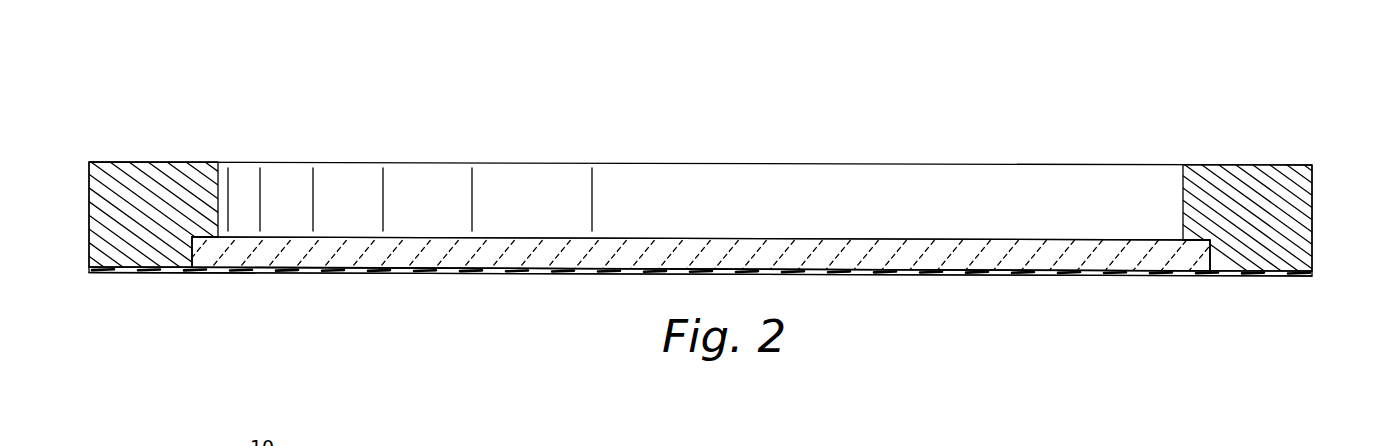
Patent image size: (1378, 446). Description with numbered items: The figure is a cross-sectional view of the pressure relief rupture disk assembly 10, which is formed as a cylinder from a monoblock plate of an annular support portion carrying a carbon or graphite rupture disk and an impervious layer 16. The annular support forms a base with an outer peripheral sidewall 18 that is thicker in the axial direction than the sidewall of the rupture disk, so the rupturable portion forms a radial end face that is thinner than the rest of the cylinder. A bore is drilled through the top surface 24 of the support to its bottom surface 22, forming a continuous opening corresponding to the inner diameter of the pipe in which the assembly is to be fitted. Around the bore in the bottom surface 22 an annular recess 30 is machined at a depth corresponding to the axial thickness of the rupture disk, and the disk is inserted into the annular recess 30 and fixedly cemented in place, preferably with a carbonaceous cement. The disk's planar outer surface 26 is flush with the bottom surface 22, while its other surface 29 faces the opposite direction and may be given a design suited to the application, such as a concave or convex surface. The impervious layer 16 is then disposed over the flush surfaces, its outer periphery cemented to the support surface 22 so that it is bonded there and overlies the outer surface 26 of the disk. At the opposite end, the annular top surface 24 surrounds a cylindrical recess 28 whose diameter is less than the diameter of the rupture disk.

The pressure relief rupture disk assembly 10 is at (263, 108).
The impervious layer 16 is at (1299, 288).
The outer peripheral sidewall 18 is at (689, 196).
The bottom surface 22 is at (1248, 278).
The top surface 24 is at (1238, 165).
The outer surface 26 is at (1088, 273).
The cylindrical recess 28 is at (707, 197).
The other surface 29 is at (807, 238).
The annular recess 30 is at (196, 236).